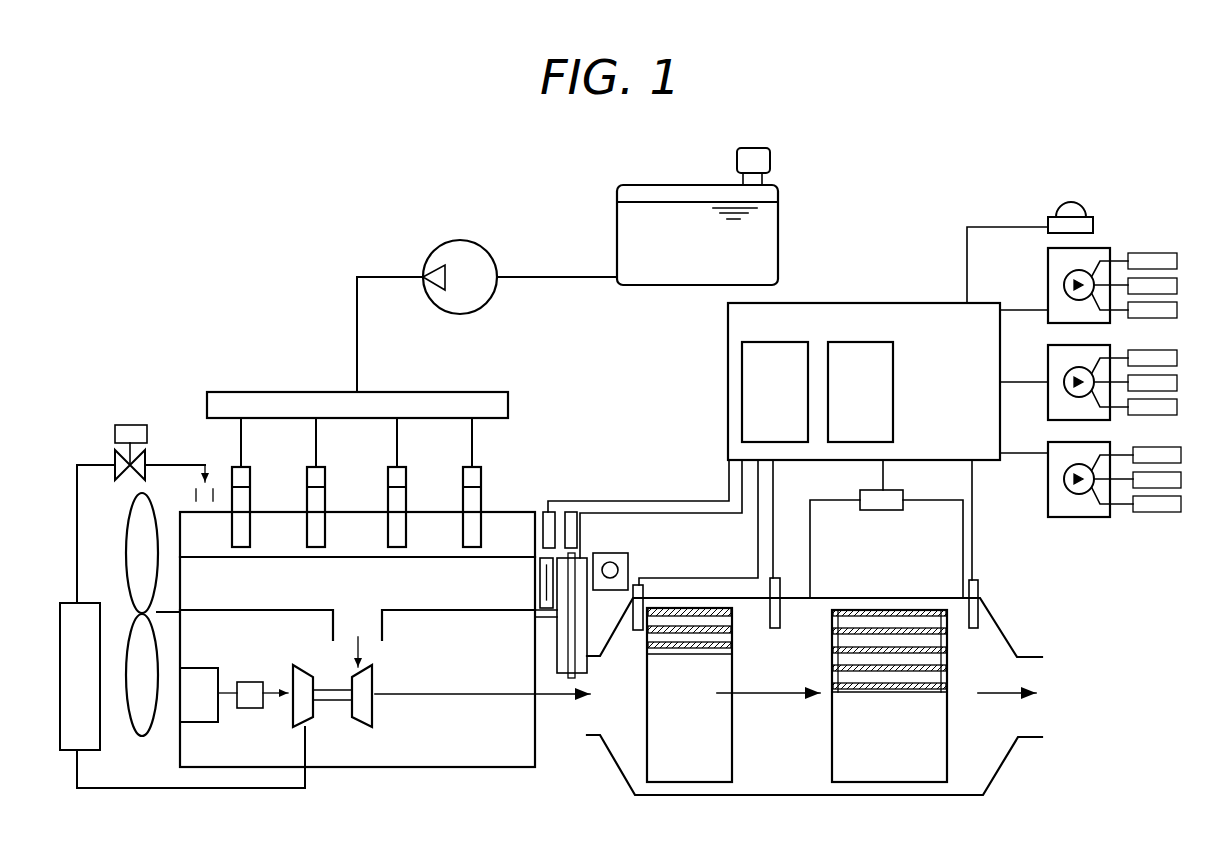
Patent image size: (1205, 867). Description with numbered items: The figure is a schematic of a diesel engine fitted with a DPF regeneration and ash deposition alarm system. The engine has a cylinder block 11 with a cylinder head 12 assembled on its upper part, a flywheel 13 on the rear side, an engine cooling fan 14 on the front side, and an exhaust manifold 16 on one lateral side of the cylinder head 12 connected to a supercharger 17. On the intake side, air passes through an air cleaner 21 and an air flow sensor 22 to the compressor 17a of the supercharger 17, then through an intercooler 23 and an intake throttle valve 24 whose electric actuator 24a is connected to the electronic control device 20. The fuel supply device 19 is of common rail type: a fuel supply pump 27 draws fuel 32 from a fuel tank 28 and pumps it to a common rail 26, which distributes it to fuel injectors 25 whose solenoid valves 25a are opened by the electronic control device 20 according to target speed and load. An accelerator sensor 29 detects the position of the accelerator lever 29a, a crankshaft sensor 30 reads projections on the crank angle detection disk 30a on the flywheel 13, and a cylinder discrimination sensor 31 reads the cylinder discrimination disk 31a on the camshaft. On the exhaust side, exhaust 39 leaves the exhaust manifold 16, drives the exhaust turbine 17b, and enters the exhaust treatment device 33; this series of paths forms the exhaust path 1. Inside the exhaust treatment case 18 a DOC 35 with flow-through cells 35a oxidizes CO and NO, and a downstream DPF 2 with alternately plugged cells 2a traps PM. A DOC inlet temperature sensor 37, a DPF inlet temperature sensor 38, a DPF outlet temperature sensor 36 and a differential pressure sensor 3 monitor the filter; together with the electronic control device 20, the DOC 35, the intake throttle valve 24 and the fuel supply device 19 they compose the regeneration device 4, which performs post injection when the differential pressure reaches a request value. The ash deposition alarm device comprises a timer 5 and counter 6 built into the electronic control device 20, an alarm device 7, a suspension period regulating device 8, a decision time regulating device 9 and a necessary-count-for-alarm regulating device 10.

The exhaust path 1 is at (583, 757).
The DPF 2 is at (889, 726).
The cells 2a is at (925, 660).
The differential pressure sensor 3 is at (885, 507).
The regeneration device 4 is at (641, 421).
The timer 5 is at (770, 350).
The counter 6 is at (850, 347).
The alarm device 7 is at (1065, 210).
The suspension period regulating device 8 is at (1062, 265).
The decision time regulating device 9 is at (1060, 352).
The necessary-count-for-alarm regulating device 10 is at (1070, 445).
The cylinder block 11 is at (497, 750).
The cylinder head 12 is at (527, 525).
The flywheel 13 is at (584, 665).
The engine cooling fan 14 is at (137, 510).
The exhaust manifold 16 is at (227, 598).
The supercharger 17 is at (350, 732).
The compressor 17a is at (293, 717).
The exhaust turbine 17b is at (367, 703).
The exhaust treatment case 18 is at (912, 797).
The fuel supply device 19 is at (500, 378).
The electronic control device 20 is at (798, 401).
The air cleaner 21 is at (193, 712).
The air flow sensor 22 is at (255, 682).
The intercooler 23 is at (88, 717).
The intake throttle valve 24 is at (115, 460).
The electric actuator 24a is at (131, 425).
The fuel injectors 25 is at (318, 467).
The solenoid valve 25a is at (306, 470).
The common rail 26 is at (283, 400).
The fuel supply pump 27 is at (468, 257).
The fuel tank 28 is at (731, 216).
The accelerator sensor 29 is at (630, 565).
The accelerator lever 29a is at (610, 567).
The crankshaft sensor 30 is at (572, 510).
The crank angle detection disk 30a is at (575, 570).
The cylinder discrimination sensor 31 is at (555, 510).
The cylinder discrimination disk 31a is at (533, 608).
The fuel 32 is at (757, 215).
The exhaust treatment device 33 is at (808, 797).
The DOC 35 is at (689, 728).
The cells 35a is at (700, 622).
The DPF outlet temperature sensor 36 is at (972, 630).
The DOC inlet temperature sensor 37 is at (634, 630).
The DPF inlet temperature sensor 38 is at (773, 630).
The exhaust 39 is at (548, 697).